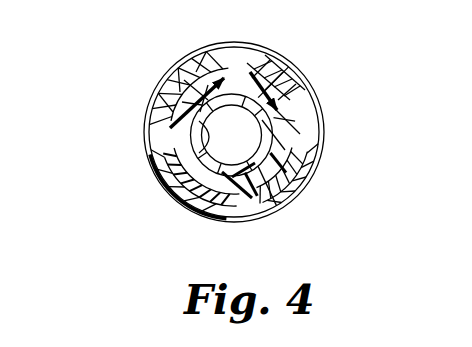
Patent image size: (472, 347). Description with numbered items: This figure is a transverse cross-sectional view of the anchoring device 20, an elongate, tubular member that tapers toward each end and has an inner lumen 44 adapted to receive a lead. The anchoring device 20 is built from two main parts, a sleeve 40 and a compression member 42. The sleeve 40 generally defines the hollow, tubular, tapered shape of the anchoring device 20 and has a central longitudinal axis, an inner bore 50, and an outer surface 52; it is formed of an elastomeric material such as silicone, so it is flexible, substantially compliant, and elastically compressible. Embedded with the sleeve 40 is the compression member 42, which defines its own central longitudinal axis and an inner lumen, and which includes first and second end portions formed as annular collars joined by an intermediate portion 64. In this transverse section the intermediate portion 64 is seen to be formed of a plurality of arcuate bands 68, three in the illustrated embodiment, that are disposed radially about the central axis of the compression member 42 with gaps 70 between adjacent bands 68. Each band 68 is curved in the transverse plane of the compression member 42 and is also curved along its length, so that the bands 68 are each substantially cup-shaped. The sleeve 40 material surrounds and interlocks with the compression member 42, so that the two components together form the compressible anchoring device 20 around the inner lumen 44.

The anchoring device 20 is at (325, 56).
The sleeve 40 is at (322, 141).
The compression member 42 is at (302, 163).
The inner lumen 44 is at (272, 108).
The inner bore 50 is at (180, 172).
The outer surface 52 is at (200, 140).
The intermediate portion 64 is at (259, 208).
The arcuate bands 68 is at (192, 92).
The gaps 70 is at (239, 78).